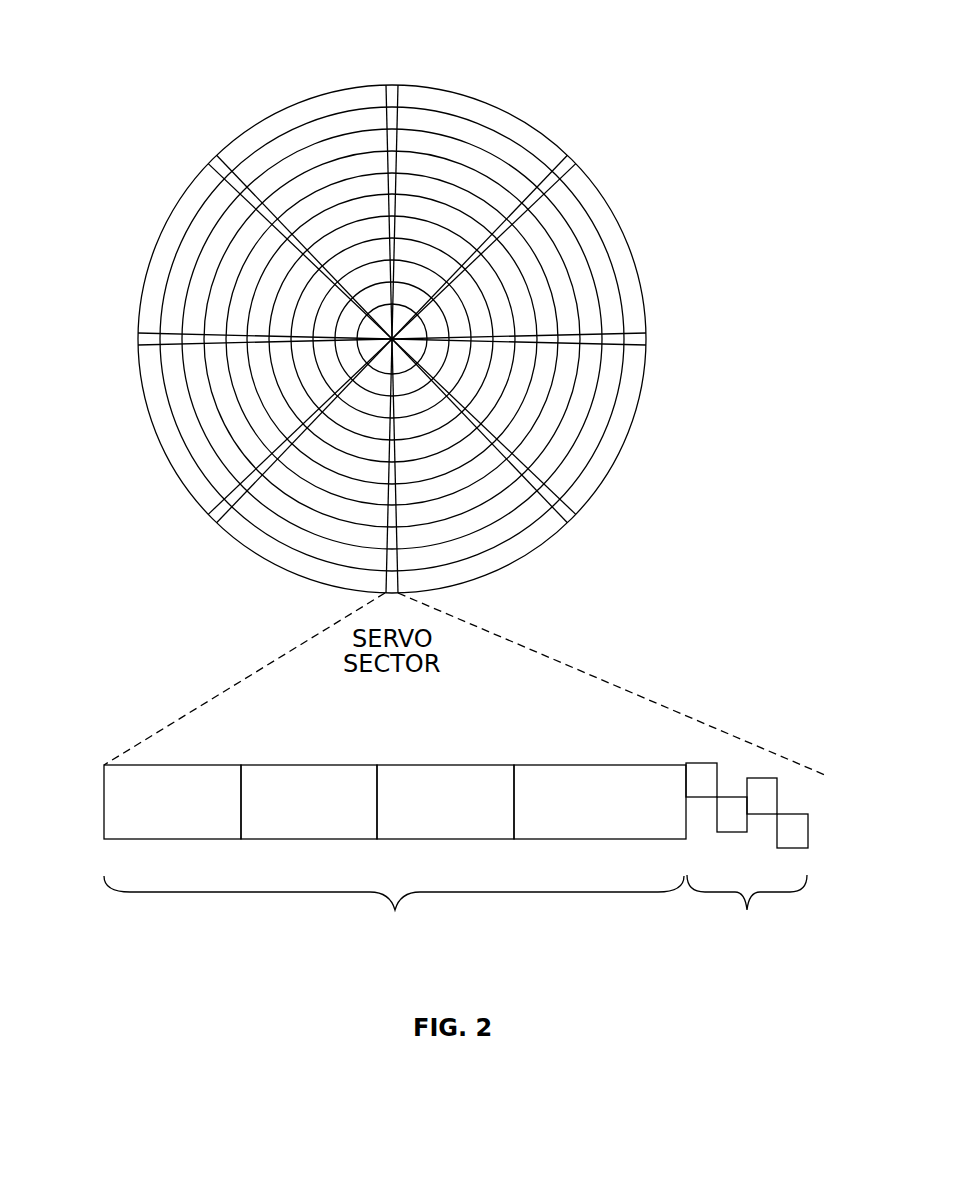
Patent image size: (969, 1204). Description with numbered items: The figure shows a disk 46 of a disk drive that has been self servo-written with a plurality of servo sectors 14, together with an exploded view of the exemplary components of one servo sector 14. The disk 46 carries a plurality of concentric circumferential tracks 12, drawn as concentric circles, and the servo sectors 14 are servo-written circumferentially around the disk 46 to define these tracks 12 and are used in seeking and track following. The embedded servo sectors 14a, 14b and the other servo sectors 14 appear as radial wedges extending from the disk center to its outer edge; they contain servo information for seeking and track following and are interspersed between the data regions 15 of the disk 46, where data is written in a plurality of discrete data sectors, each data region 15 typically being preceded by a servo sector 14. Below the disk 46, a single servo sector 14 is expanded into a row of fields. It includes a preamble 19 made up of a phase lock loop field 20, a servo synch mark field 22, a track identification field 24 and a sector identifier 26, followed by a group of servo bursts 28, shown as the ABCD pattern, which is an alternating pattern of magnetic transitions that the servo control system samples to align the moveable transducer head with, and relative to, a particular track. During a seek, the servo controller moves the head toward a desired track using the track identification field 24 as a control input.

The disk 46 is at (233, 62).
The circumferential tracks 12 is at (176, 236).
The servo sectors 14 is at (392, 92).
The embedded servo sector 14a is at (217, 163).
The embedded servo sector 14b is at (148, 338).
The data regions 15 is at (455, 127).
The preamble 19 is at (382, 870).
The phase lock loop (PLL) field 20 is at (128, 840).
The servo synch mark (SSM) field 22 is at (262, 840).
The track identification (TKID) field 24 is at (398, 840).
The sector identifier (ID) 26 is at (538, 840).
The servo bursts 28 is at (690, 755).